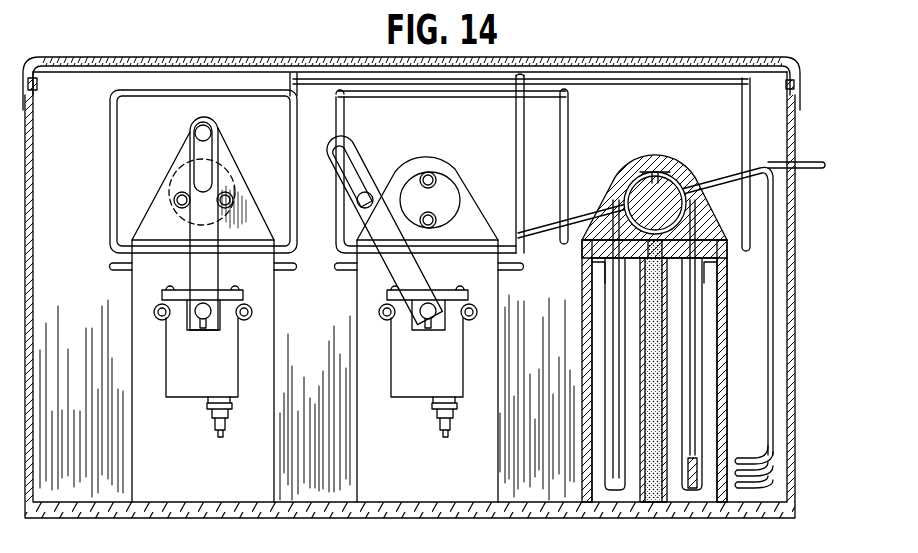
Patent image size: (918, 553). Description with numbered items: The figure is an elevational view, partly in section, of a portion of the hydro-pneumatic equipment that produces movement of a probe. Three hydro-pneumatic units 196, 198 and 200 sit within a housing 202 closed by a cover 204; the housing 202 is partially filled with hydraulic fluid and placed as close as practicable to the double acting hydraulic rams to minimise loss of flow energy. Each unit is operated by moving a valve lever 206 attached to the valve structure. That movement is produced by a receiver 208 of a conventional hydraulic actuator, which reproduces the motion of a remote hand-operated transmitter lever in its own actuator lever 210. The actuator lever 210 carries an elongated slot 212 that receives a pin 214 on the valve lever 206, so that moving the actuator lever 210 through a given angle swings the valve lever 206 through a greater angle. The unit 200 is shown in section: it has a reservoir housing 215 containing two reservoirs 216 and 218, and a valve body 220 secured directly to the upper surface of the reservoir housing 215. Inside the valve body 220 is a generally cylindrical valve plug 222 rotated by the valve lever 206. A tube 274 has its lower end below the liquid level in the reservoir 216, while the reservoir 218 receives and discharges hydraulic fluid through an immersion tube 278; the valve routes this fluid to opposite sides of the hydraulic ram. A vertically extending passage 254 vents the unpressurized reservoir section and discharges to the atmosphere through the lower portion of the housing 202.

The hydro-pneumatic unit 196 is at (270, 420).
The hydro-pneumatic unit 198 is at (498, 408).
The hydro-pneumatic unit 200 is at (574, 431).
The housing 202 is at (793, 333).
The cover 204 is at (669, 60).
The valve lever 206 is at (222, 174).
The receiver 208 is at (175, 369).
The actuator lever 210 is at (213, 268).
The elongated slot 212 is at (212, 152).
The pin 214 is at (194, 130).
The reservoir housing 215 is at (725, 398).
The reservoir 216 is at (598, 338).
The reservoir 218 is at (707, 352).
The valve body 220 is at (662, 162).
The valve plug 222 is at (645, 186).
The vertically extending passage 254 is at (650, 492).
The tube 274 is at (613, 298).
The immersion tube 278 is at (692, 323).